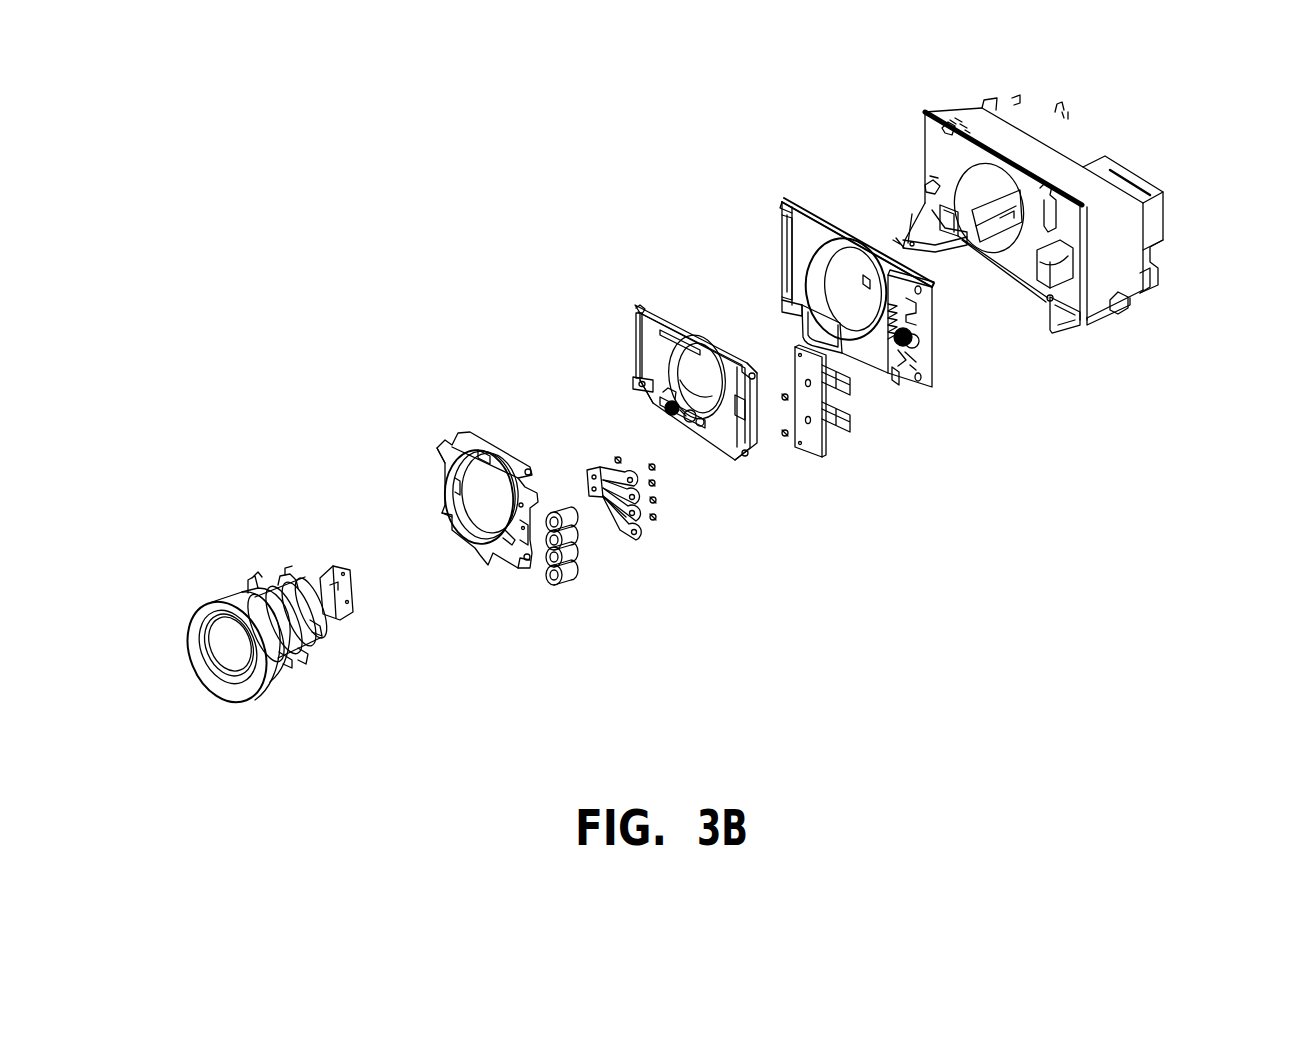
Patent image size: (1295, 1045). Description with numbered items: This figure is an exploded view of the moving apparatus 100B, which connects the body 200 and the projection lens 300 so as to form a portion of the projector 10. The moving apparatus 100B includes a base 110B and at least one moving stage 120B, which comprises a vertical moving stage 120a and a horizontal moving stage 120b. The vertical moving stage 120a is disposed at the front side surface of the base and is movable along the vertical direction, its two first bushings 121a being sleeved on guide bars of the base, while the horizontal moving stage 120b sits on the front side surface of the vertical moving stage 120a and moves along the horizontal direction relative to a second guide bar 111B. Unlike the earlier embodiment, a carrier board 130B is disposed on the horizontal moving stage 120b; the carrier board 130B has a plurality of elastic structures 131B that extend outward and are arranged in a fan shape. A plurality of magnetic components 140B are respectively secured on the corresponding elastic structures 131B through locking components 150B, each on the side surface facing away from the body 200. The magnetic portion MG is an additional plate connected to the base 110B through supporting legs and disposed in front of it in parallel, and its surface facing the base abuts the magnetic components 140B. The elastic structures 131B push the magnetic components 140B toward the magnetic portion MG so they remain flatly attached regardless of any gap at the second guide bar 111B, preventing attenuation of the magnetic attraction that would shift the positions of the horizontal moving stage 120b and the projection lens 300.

The projector 10 is at (1284, 685).
The moving apparatus 100B is at (333, 137).
The base 110B is at (813, 233).
The second guide bar 111B is at (788, 262).
The moving stage 120B is at (537, 257).
The vertical moving stage 120a is at (655, 336).
The horizontal moving stage 120b is at (456, 425).
The first bushing 121a is at (636, 318).
The carrier board 130B is at (590, 472).
The elastic structure 131B is at (630, 525).
The magnetic component 140B is at (563, 585).
The locking component 150B is at (655, 518).
The body 200 is at (1015, 135).
The projection lens 300 is at (208, 690).
The magnetic portion MG is at (817, 448).